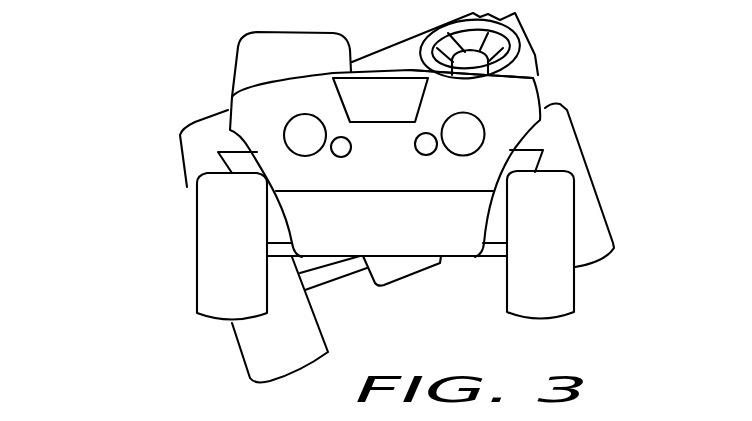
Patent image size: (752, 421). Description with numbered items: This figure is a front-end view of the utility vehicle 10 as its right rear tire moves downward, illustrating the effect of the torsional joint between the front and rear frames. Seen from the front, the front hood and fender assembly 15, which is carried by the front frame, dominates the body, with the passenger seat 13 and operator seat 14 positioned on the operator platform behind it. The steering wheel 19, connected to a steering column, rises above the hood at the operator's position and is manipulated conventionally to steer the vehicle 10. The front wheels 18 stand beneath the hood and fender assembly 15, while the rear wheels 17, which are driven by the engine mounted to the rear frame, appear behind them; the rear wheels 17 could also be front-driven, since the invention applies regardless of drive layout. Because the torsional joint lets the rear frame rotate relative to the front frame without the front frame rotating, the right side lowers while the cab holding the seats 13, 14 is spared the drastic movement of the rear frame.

The utility vehicle 10 is at (150, 88).
The passenger seat 13 is at (257, 35).
The operator seat 14 is at (522, 68).
The front hood and fender assembly 15 is at (390, 178).
The rear wheels 17 is at (593, 220).
The front wheels 18 is at (213, 290).
The steering wheel 19 is at (535, 78).